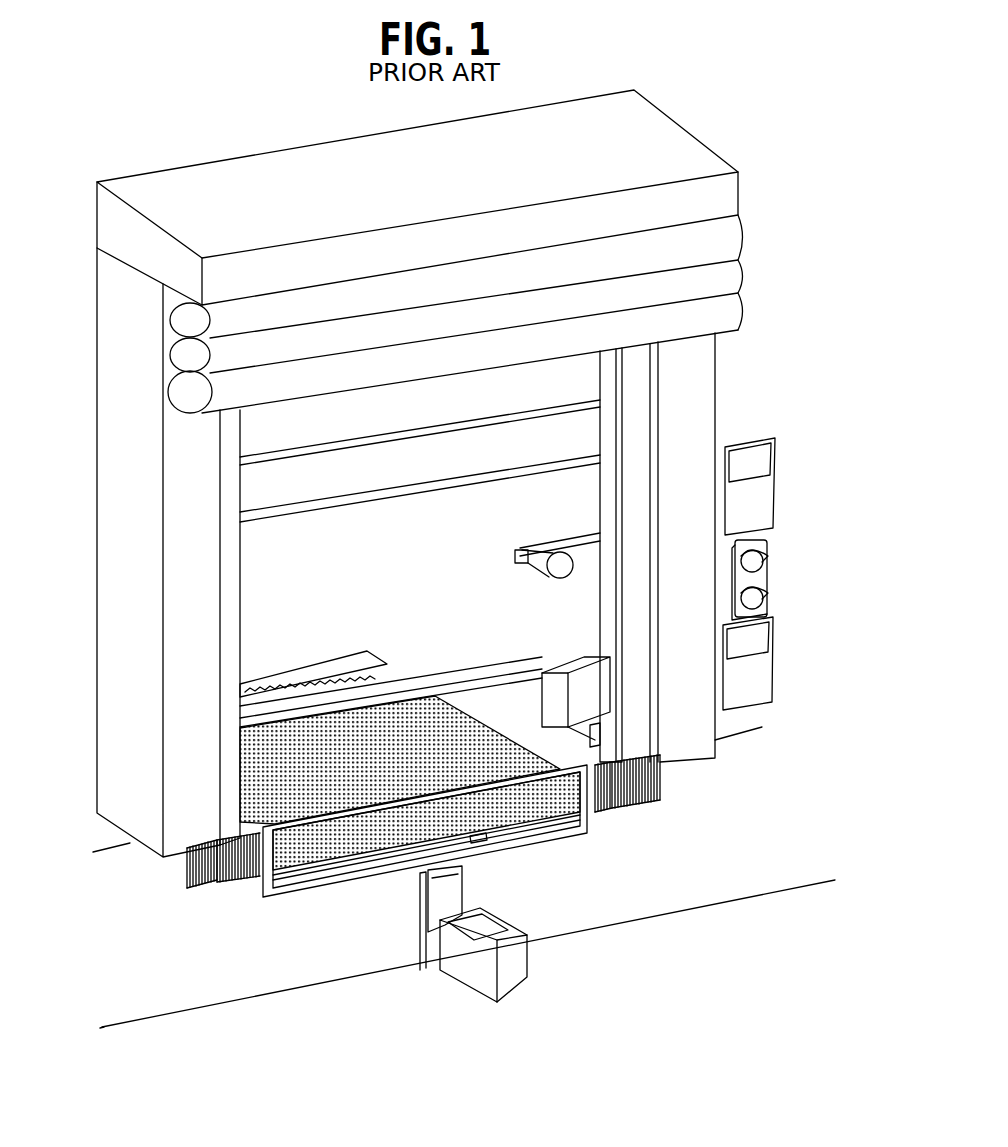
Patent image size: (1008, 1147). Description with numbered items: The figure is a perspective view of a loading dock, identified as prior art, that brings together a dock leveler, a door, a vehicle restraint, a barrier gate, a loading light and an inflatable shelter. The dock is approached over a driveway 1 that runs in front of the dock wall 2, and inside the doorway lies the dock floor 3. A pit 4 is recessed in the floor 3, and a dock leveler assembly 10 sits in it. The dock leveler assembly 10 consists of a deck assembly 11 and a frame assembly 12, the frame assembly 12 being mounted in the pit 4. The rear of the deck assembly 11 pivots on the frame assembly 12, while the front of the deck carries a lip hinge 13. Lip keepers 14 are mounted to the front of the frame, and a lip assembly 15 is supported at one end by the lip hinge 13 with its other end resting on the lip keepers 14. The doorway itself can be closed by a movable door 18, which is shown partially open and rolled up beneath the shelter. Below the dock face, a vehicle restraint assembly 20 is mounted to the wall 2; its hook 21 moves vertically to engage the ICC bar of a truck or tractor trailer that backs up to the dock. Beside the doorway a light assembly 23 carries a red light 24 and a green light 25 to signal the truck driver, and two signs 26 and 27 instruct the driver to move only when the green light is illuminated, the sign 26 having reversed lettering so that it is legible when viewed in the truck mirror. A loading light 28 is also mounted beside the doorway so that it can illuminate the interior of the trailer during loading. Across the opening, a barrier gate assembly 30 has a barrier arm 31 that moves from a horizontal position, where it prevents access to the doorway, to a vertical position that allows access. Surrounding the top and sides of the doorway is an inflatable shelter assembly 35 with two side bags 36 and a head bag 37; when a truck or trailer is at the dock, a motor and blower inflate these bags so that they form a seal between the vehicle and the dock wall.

The driveway 1 is at (577, 987).
The dock wall 2 is at (613, 917).
The dock floor 3 is at (388, 647).
The pit 4 is at (451, 839).
The dock leveler assembly 10 is at (314, 637).
The deck assembly 11 is at (314, 637).
The frame assembly 12 is at (345, 655).
The lip hinge 13 is at (615, 725).
The lip keepers 14 is at (313, 873).
The lip assembly 15 is at (480, 847).
The movable door 18 is at (345, 505).
The vehicle restraint assembly 20 is at (480, 965).
The hook 21 is at (477, 920).
The light assembly 23 is at (787, 563).
The red light 24 is at (770, 566).
The green light 25 is at (770, 607).
The sign 26 is at (775, 482).
The sign 27 is at (773, 683).
The loading light 28 is at (545, 572).
The barrier gate assembly 30 is at (540, 680).
The barrier arm 31 is at (475, 660).
The inflatable shelter assembly 35 is at (707, 147).
The side bags 36 is at (230, 602).
The head bag 37 is at (735, 318).